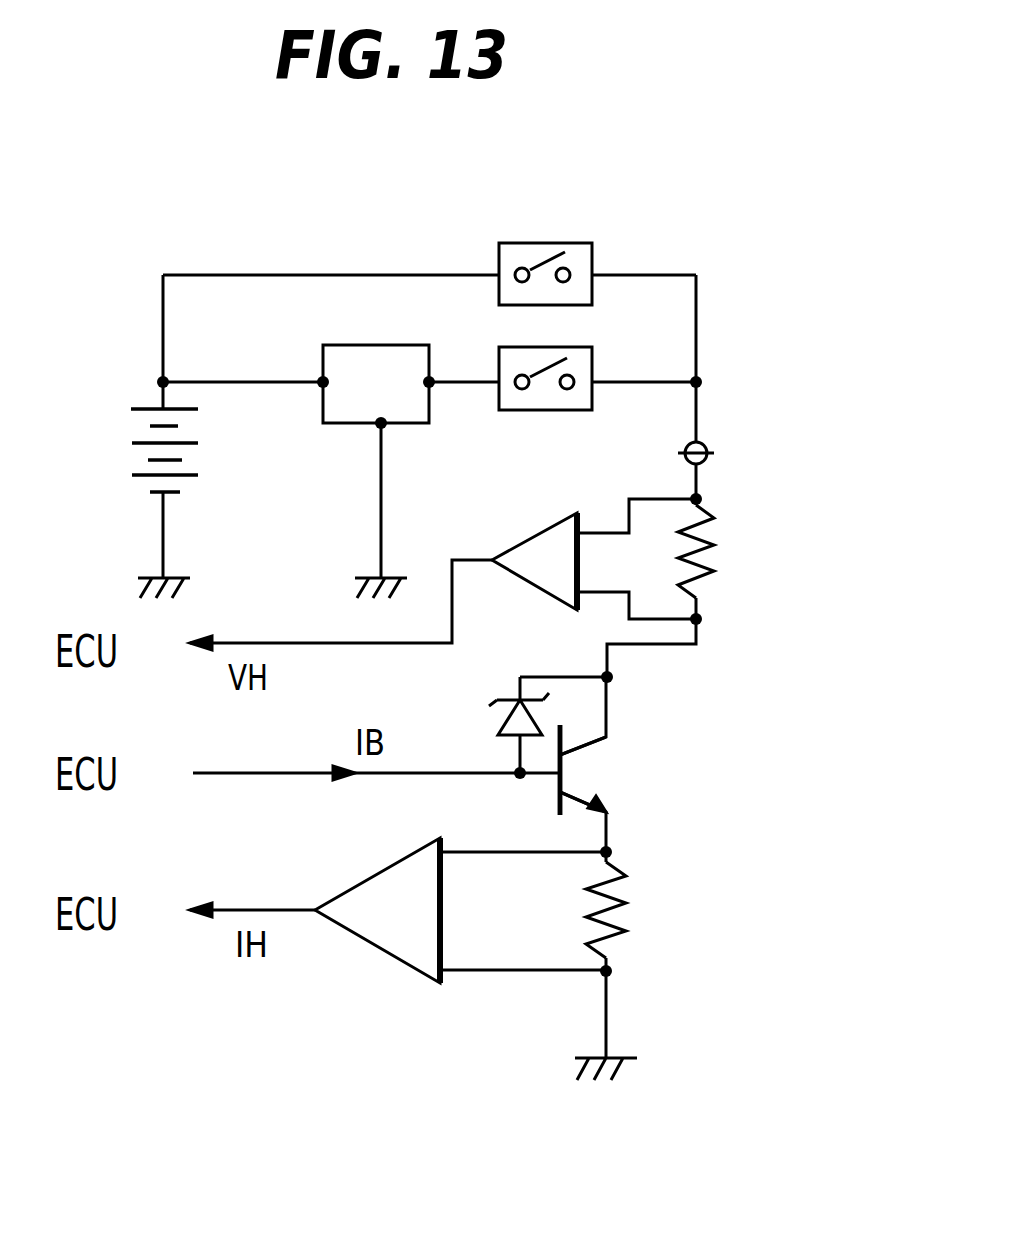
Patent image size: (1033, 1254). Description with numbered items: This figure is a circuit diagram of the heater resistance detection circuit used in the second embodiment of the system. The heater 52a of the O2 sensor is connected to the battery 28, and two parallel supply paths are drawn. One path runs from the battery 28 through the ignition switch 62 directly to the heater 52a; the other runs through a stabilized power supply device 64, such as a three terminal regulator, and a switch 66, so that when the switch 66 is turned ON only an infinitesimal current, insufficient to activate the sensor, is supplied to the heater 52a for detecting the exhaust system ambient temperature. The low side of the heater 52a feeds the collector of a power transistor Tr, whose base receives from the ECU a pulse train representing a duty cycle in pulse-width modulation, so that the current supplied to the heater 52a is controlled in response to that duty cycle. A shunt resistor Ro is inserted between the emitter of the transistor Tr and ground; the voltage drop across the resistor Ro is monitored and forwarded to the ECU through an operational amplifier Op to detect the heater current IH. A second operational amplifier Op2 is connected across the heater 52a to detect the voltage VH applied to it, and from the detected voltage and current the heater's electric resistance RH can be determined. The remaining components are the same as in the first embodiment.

The ignition switch 62 is at (593, 253).
The switch 66 is at (545, 411).
The stabilized power supply device 64 is at (410, 424).
The battery 28 is at (197, 462).
The heater 52a is at (722, 572).
The second operational amplifier Op2 is at (525, 590).
The operational amplifier Op is at (366, 878).
The power transistor Tr is at (583, 775).
The shunt resistor Ro is at (612, 897).